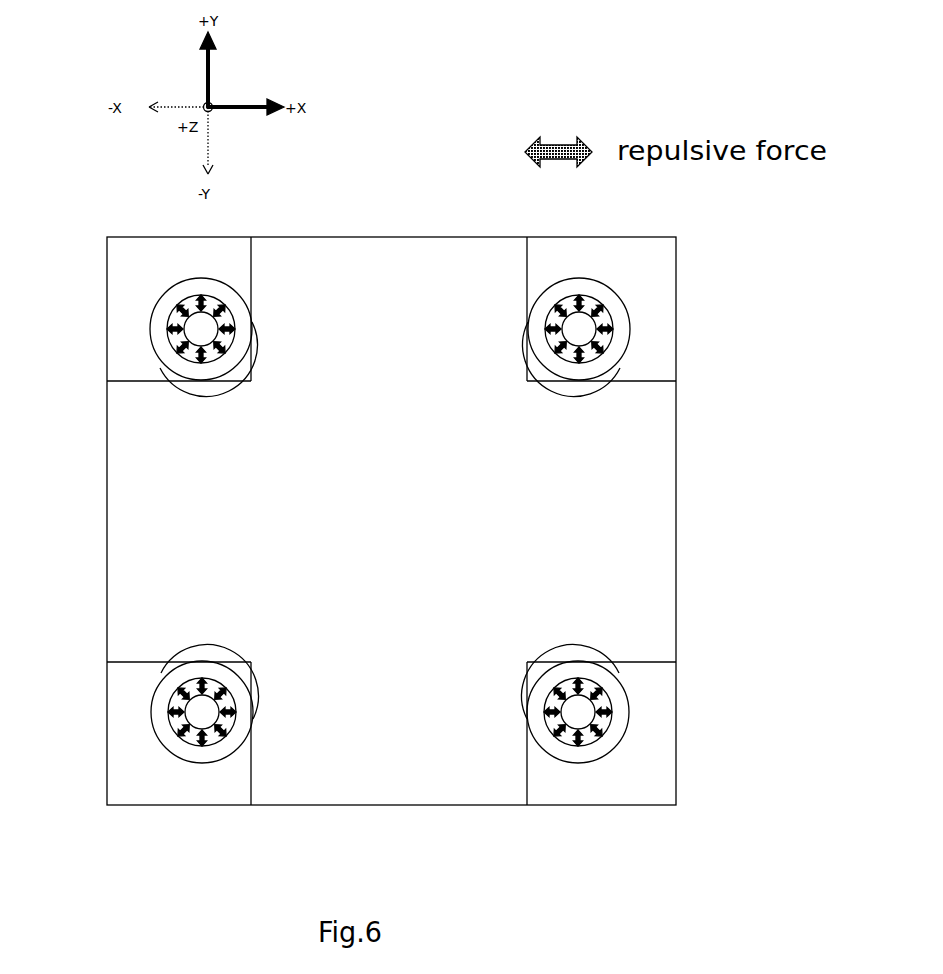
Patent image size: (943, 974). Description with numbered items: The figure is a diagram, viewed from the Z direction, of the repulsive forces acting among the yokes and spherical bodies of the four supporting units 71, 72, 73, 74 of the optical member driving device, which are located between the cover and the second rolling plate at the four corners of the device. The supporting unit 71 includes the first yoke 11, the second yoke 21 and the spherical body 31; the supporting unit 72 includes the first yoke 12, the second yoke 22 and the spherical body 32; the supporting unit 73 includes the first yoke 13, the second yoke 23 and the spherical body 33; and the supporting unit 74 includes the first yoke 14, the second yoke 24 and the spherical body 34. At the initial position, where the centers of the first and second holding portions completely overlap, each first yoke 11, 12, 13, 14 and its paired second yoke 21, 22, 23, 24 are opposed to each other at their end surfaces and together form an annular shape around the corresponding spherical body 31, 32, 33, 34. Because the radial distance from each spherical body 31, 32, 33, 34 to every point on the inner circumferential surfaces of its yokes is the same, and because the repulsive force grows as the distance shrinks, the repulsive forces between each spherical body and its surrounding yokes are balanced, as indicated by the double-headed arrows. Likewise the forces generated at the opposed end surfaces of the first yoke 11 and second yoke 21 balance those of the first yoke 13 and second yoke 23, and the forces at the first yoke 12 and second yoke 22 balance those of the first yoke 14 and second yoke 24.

The first yoke 11 is at (600, 282).
The first yoke 12 is at (181, 287).
The first yoke 13 is at (212, 750).
The first yoke 14 is at (597, 762).
The second yoke 21 is at (612, 348).
The second yoke 22 is at (172, 352).
The second yoke 23 is at (178, 693).
The second yoke 24 is at (603, 677).
The spherical body 31 is at (608, 312).
The spherical body 32 is at (170, 312).
The spherical body 33 is at (182, 720).
The spherical body 34 is at (615, 740).
The supporting unit 71 is at (636, 307).
The supporting unit 72 is at (141, 307).
The supporting unit 73 is at (141, 738).
The supporting unit 74 is at (638, 738).